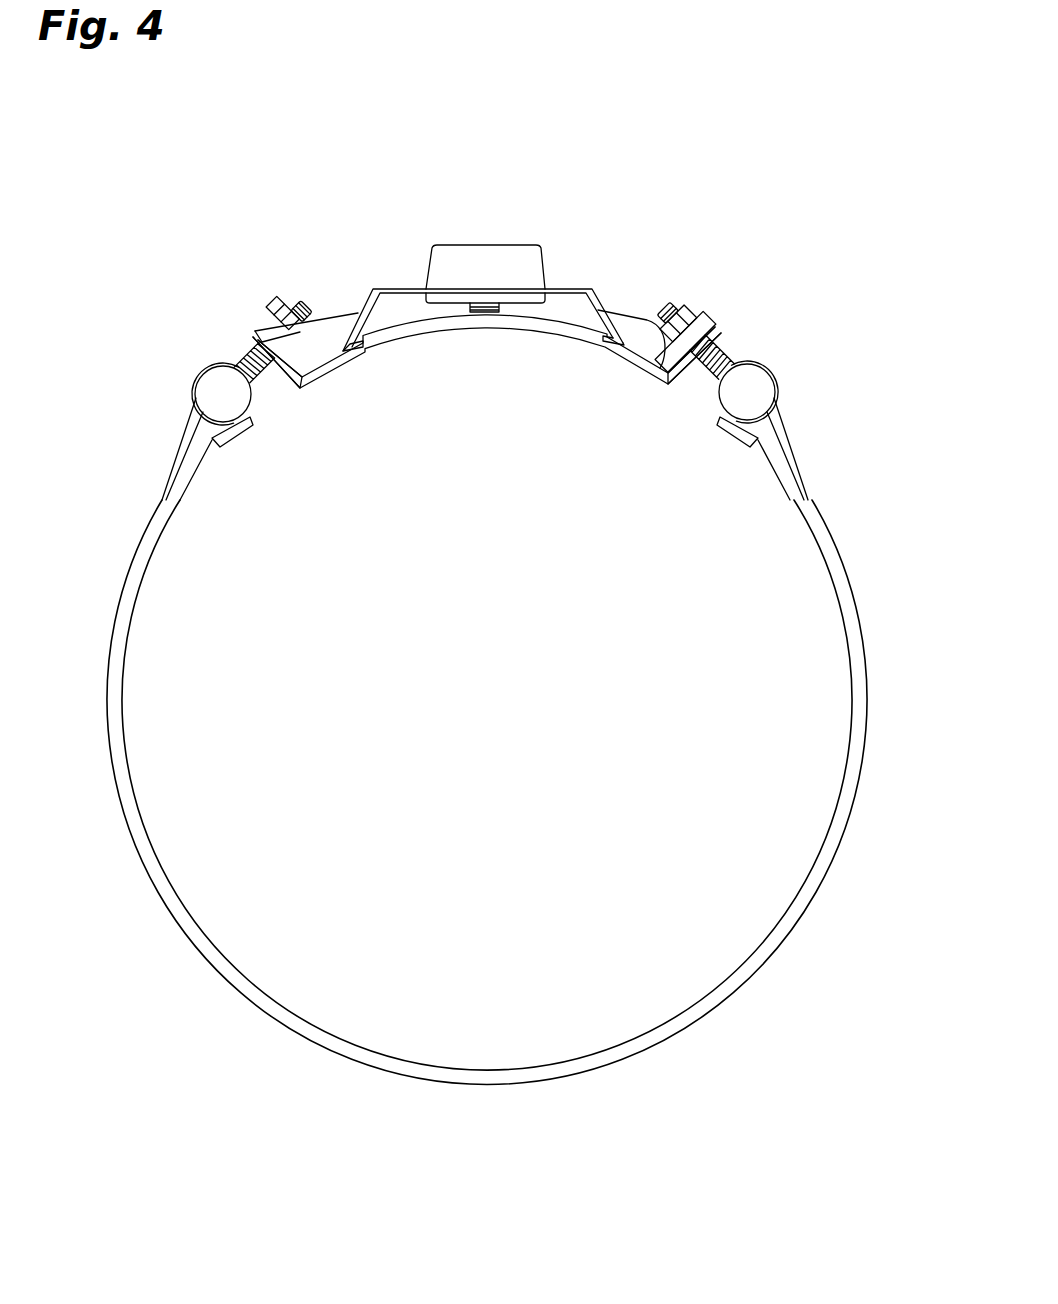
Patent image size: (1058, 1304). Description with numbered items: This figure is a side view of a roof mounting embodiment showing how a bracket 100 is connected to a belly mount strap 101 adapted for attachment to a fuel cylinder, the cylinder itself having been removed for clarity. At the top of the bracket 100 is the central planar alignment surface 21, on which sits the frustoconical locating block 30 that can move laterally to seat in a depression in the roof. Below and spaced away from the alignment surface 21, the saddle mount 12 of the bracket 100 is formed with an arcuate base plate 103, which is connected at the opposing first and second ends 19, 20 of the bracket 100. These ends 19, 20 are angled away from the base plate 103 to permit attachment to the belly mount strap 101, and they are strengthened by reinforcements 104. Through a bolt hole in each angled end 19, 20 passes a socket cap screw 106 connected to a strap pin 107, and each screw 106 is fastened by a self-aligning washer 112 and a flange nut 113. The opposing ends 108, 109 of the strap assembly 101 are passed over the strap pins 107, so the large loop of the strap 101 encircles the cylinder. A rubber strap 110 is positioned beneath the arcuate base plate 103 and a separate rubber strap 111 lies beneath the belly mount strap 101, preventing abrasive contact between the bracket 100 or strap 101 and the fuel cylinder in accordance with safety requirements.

The bracket 100 is at (614, 268).
The saddle mount 12 is at (607, 300).
The first end 19 is at (304, 384).
The second end 20 is at (662, 380).
The planar alignment surface 21 is at (557, 288).
The locating block 30 is at (428, 253).
The belly mount strap 101 is at (807, 473).
The arcuate base plate 103 is at (582, 343).
The reinforcement 104 is at (323, 354).
The socket cap screw 106 is at (256, 362).
The strap pin 107 is at (217, 398).
The strap end 108 is at (183, 430).
The strap end 109 is at (797, 428).
The rubber strap 110 is at (418, 342).
The rubber strap 111 is at (843, 582).
The self-aligning washer 112 is at (262, 330).
The flange nut 113 is at (282, 310).